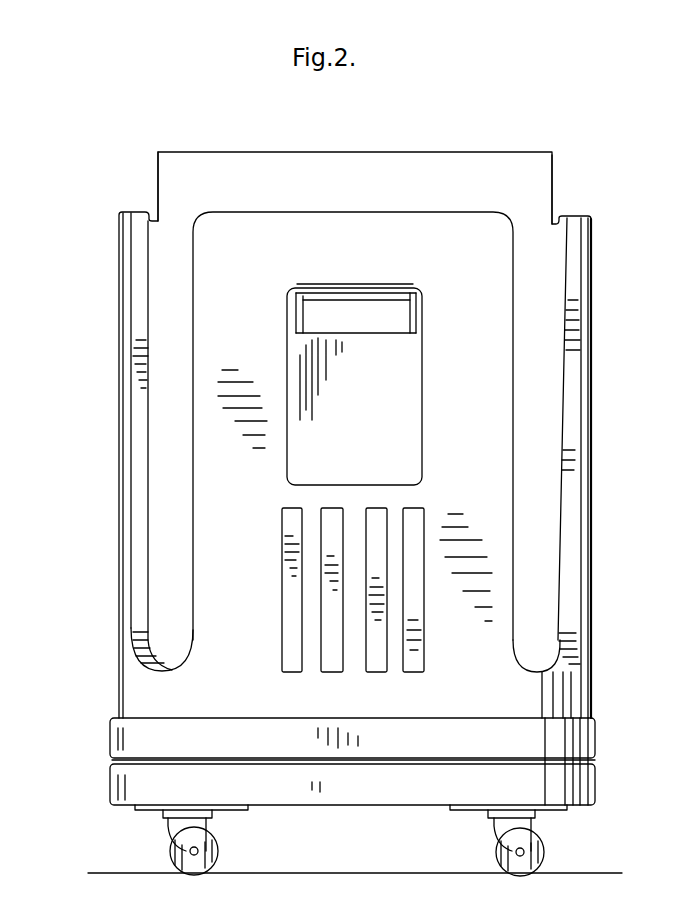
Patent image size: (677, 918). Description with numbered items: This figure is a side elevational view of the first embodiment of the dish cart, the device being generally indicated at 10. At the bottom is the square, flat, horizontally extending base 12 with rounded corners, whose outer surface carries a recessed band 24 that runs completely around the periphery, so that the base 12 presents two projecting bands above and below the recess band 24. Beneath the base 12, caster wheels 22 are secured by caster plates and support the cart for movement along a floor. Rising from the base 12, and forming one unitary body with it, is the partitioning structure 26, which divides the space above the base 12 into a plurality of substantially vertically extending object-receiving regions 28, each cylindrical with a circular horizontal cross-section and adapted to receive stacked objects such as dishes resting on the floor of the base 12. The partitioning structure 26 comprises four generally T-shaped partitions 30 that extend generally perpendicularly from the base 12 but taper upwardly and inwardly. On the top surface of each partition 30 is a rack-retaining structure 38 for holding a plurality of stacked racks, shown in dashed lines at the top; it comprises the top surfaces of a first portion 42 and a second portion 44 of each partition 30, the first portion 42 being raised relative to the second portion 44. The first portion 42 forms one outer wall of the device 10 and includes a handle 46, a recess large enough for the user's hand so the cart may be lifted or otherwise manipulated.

The device 10 is at (604, 268).
The base 12 is at (96, 772).
The caster wheel 22 is at (218, 848).
The band 24 is at (596, 762).
The partitioning structure 26 is at (104, 683).
The object-receiving region 28 is at (160, 431).
The partition 30 is at (500, 360).
The rack-retaining structure 38 is at (139, 200).
The first portion 42 is at (258, 284).
The second portion 44 is at (175, 220).
The handle 46 is at (397, 325).